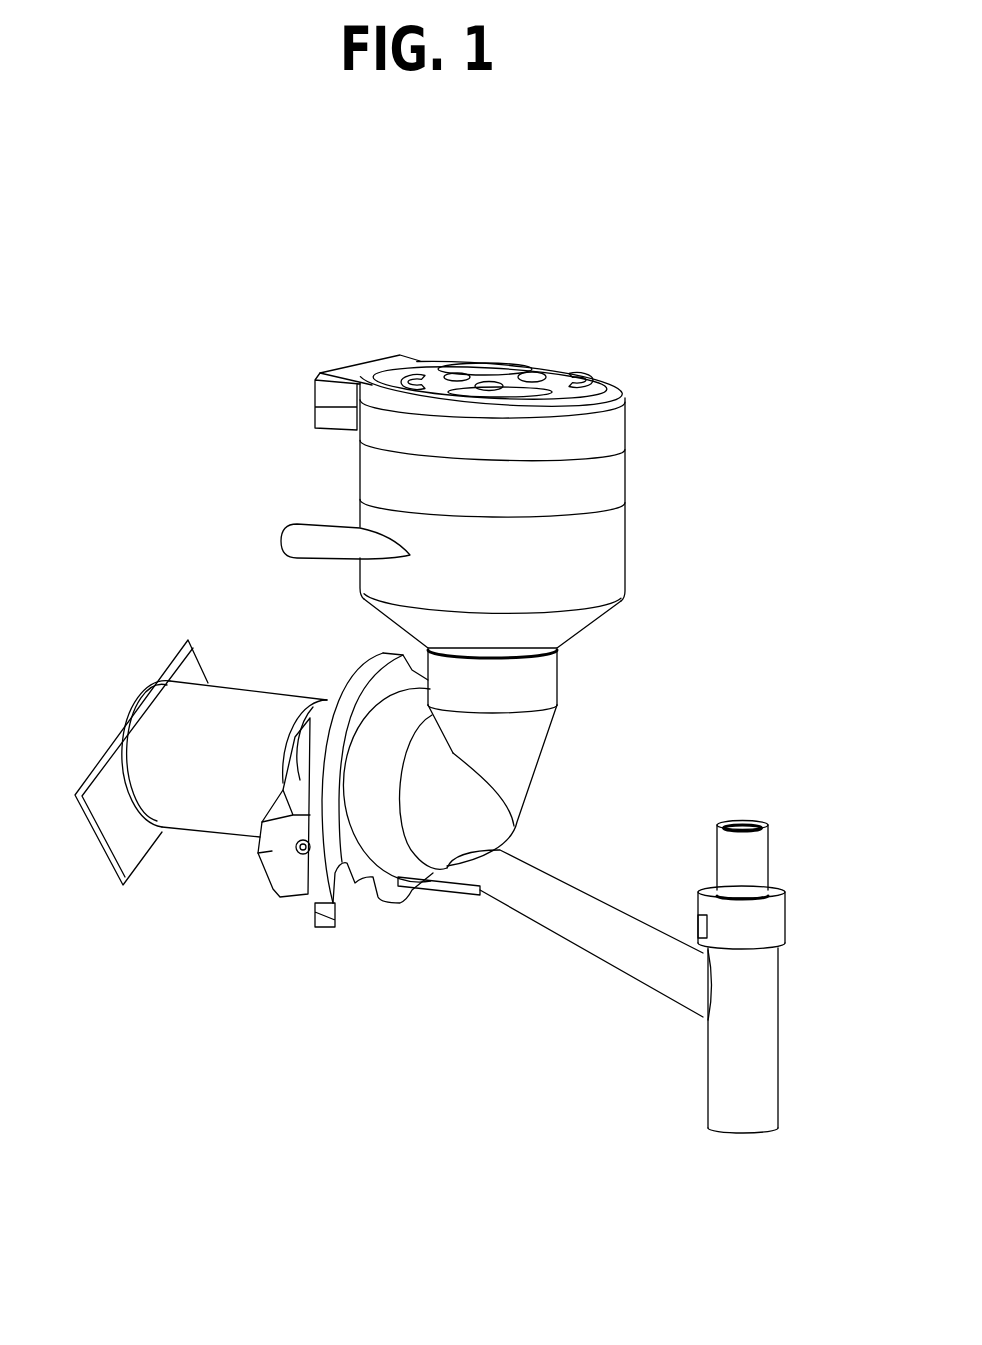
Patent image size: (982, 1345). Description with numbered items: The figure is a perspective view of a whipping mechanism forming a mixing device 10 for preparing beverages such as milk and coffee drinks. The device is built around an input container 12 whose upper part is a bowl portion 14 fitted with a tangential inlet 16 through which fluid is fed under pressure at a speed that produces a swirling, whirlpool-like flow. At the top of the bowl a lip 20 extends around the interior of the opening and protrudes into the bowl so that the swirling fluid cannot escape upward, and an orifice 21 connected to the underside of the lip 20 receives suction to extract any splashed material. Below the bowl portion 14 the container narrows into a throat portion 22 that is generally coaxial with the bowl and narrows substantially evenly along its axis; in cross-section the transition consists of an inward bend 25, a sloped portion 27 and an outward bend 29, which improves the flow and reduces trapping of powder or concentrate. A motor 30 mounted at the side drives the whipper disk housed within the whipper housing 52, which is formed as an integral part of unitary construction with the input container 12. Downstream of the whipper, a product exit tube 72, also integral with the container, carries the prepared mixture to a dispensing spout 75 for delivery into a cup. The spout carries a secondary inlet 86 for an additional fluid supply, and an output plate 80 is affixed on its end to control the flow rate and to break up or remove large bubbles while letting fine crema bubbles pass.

The mixing device 10 is at (125, 436).
The input container 12 is at (648, 512).
The bowl portion 14 is at (605, 560).
The tangential inlet 16 is at (353, 543).
The lip 20 is at (505, 340).
The orifice 21 is at (296, 360).
The throat portion 22 is at (513, 780).
The inward bend 25 is at (593, 610).
The sloped portion 27 is at (565, 637).
The outward bend 29 is at (453, 635).
The motor 30 is at (245, 690).
The whipper housing 52 is at (420, 838).
The product exit tube 72 is at (467, 858).
The dispensing spout 75 is at (583, 918).
The output plate 80 is at (731, 1152).
The secondary inlet 86 is at (742, 821).